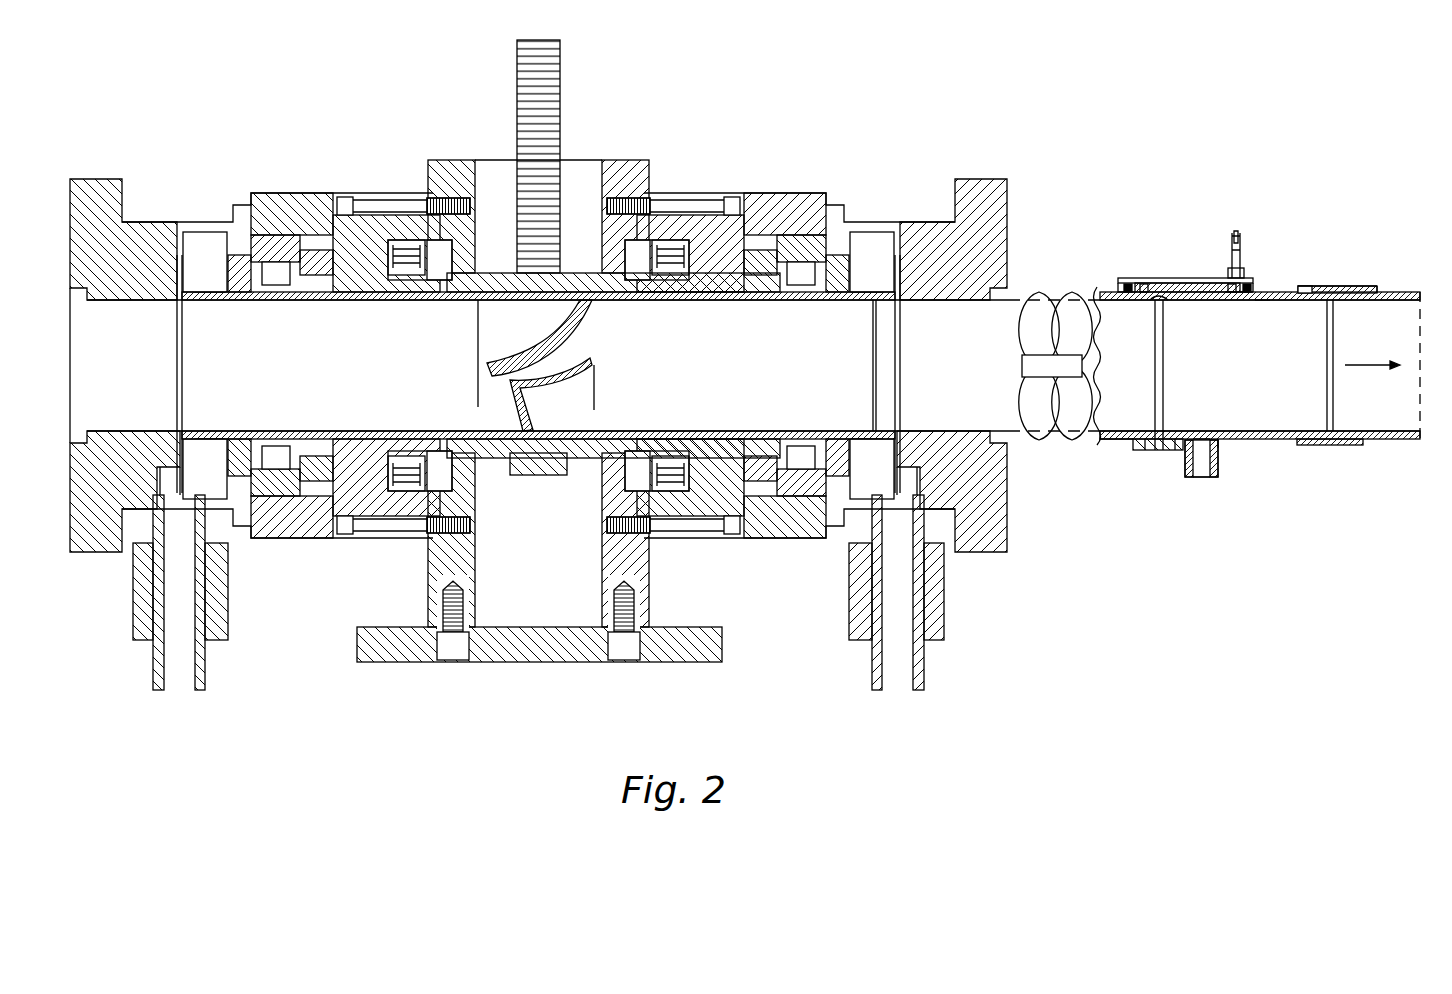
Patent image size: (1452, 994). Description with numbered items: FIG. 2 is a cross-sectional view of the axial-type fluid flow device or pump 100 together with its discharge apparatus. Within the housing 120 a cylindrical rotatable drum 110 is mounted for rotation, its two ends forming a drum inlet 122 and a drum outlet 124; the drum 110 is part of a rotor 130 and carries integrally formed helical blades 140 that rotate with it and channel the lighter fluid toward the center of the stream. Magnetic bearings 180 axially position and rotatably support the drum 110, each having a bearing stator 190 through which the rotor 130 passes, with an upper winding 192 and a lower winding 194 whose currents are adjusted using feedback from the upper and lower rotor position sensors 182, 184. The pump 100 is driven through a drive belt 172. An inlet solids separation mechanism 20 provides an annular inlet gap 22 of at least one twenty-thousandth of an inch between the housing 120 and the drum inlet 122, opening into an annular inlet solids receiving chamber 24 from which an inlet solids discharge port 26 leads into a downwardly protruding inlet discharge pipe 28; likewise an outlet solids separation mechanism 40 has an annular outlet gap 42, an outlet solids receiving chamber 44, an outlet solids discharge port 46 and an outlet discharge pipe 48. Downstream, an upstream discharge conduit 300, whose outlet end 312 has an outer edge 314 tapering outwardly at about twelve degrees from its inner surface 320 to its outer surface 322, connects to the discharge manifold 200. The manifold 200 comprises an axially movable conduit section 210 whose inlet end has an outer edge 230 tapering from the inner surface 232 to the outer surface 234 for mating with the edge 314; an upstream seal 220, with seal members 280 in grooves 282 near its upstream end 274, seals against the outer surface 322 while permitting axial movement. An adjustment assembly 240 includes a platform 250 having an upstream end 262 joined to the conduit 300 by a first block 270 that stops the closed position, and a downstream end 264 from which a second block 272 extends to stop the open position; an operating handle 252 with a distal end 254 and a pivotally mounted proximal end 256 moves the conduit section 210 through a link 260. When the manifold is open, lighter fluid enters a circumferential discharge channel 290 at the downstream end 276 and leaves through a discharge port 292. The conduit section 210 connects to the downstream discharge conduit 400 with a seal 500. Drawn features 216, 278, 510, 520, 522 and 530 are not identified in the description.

The fluid flow device 100 is at (868, 81).
The inlet solids separation mechanism 20 is at (245, 173).
The outlet solids separation mechanism 40 is at (829, 172).
The housing 120 is at (126, 192).
The drum inlet 122 is at (190, 385).
The annular inlet gap 22 is at (178, 342).
The inlet solids receiving chamber 24 is at (198, 240).
The inlet solids discharge port 26 is at (178, 500).
The inlet discharge pipe 28 is at (153, 666).
The annular outlet gap 42 is at (898, 330).
The outlet solids receiving chamber 44 is at (874, 240).
The outlet solids discharge port 46 is at (900, 500).
The outlet discharge pipe 48 is at (925, 670).
The rotatable drum 110 is at (754, 300).
The drum outlet 124 is at (887, 357).
The rotor 130 is at (592, 272).
The helical blades 140 is at (522, 352).
The drive belt 172 is at (515, 75).
The magnetic bearings 180 is at (403, 258).
The upper rotor position sensor 182 is at (441, 283).
The lower rotor position sensor 184 is at (441, 450).
The bearing stator 190 is at (369, 190).
The upper winding 192 is at (407, 280).
The lower winding 194 is at (406, 452).
The discharge manifold 200 is at (1358, 236).
The axially movable conduit section 210 is at (1271, 292).
The flange 216 is at (1175, 300).
The upstream seal 220 is at (1222, 464).
The outer edge 230 is at (1142, 282).
The inner surface 232 is at (1273, 430).
The outer surface 234 is at (1300, 445).
The adjustment assembly 240 is at (1253, 218).
The platform 250 is at (1130, 278).
The operating handle 252 is at (1230, 270).
The distal end 254 is at (1236, 232).
The proximal end 256 is at (1230, 272).
The link 260 is at (1238, 300).
The upstream end 262 is at (1125, 282).
The downstream end 264 is at (1254, 290).
The first block 270 is at (1120, 288).
The second block 272 is at (1262, 300).
The upstream end 274 is at (1140, 450).
The downstream end 276 is at (1225, 456).
The port seal 278 is at (1222, 448).
The seal members 280 is at (1163, 298).
The grooves 282 is at (1150, 452).
The circumferential discharge channel 290 is at (1210, 305).
The discharge port 292 is at (1222, 480).
The upstream discharge conduit 300 is at (1087, 478).
The outlet end 312 is at (1160, 435).
The outer edge 314 is at (1175, 452).
The inner surface 320 is at (1115, 430).
The outer surface 322 is at (1092, 440).
The downstream discharge conduit 400 is at (1403, 468).
The seal 500 is at (1316, 290).
The aperture 510 is at (1306, 298).
The clamp 520 is at (1371, 288).
The band 522 is at (1370, 292).
The opening 530 is at (1305, 300).